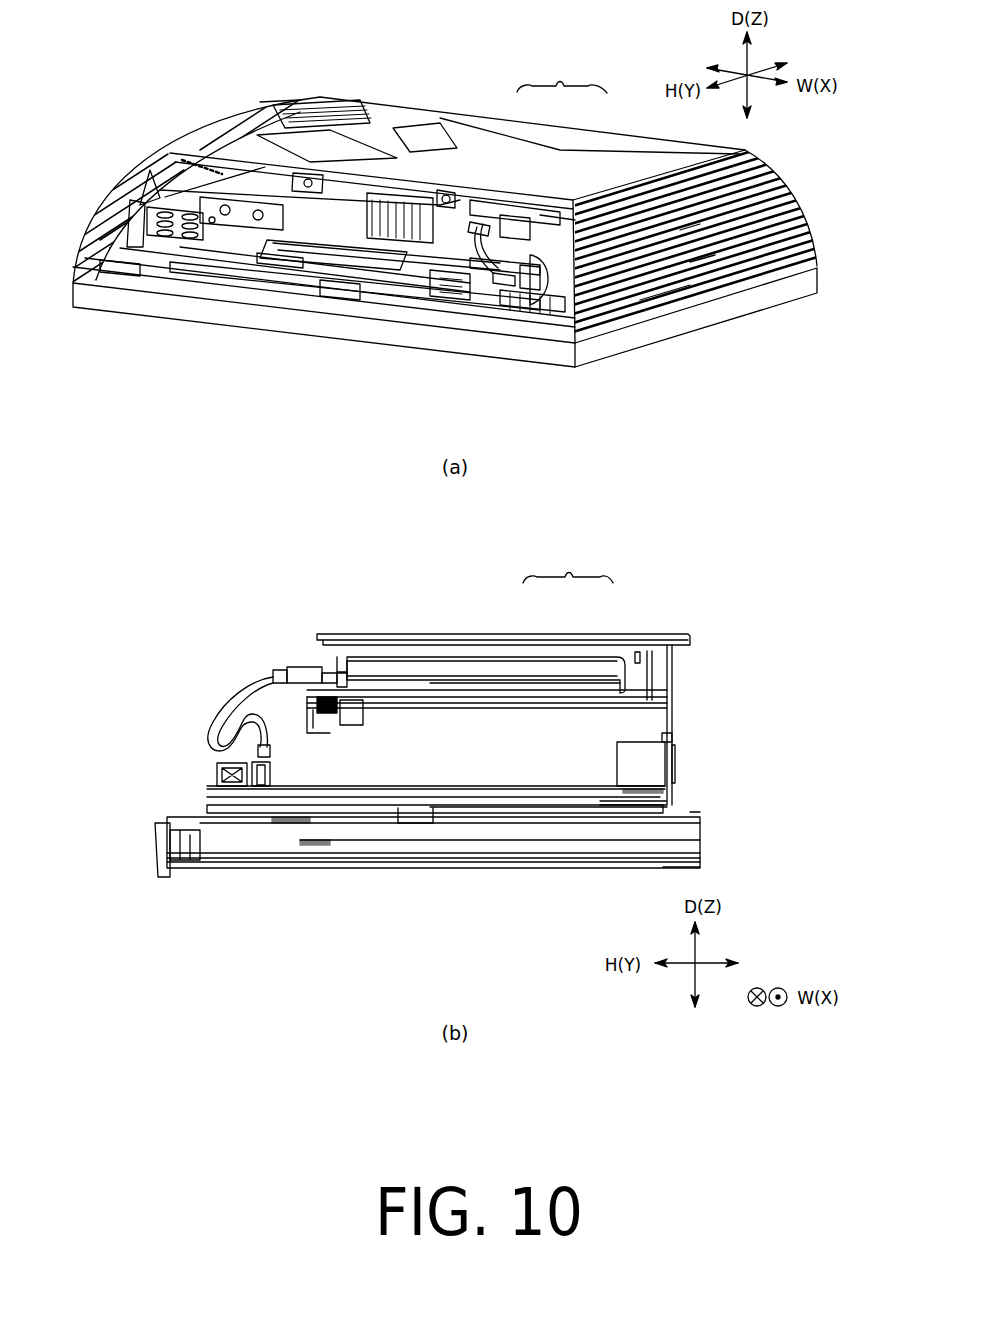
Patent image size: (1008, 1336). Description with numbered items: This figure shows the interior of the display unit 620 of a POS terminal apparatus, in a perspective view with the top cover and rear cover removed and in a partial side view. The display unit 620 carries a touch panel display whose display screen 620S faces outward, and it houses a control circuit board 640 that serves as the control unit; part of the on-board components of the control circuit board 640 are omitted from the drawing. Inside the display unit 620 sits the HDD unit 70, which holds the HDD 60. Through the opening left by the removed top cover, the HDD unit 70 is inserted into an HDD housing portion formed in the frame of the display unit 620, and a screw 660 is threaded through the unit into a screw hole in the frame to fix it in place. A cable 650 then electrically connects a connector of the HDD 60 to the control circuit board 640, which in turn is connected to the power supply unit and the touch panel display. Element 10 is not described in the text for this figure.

The display panel 10 is at (557, 227).
The HDD 60 is at (487, 270).
The HDD unit 70 is at (562, 74).
The display unit 620 is at (743, 303).
The display screen 620S is at (490, 868).
The control circuit board 640 is at (547, 780).
The cable 650 is at (460, 293).
The screw 660 is at (540, 307).